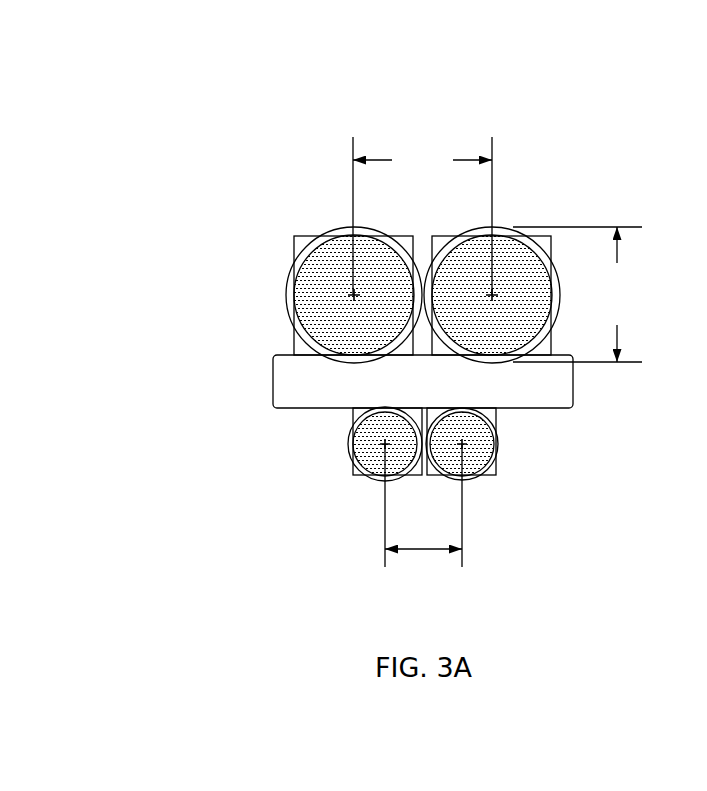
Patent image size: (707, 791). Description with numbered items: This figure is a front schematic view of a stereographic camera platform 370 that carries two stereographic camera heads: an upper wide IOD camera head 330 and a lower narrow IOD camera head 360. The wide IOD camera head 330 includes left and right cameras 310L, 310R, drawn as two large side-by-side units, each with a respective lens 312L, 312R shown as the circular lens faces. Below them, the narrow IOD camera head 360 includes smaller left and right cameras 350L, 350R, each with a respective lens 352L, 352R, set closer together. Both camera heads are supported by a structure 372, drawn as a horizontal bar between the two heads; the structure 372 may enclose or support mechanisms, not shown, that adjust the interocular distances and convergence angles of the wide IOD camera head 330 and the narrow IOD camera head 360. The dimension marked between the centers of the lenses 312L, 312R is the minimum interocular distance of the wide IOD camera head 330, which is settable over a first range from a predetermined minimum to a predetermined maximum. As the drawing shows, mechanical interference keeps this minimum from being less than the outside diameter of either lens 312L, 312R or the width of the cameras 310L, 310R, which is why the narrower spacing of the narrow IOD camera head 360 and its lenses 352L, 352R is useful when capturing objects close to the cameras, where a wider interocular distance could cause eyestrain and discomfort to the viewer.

The stereographic camera platform 370 is at (235, 83).
The wide IOD camera head 330 is at (293, 173).
The right camera 310R is at (295, 238).
The left camera 310L is at (543, 235).
The lens 312R is at (288, 288).
The lens 312L is at (535, 347).
The structure 372 is at (273, 385).
The narrow IOD camera head 360 is at (355, 557).
The right camera 350R is at (355, 470).
The left camera 350L is at (498, 478).
The lens 352R is at (377, 478).
The lens 352L is at (494, 428).